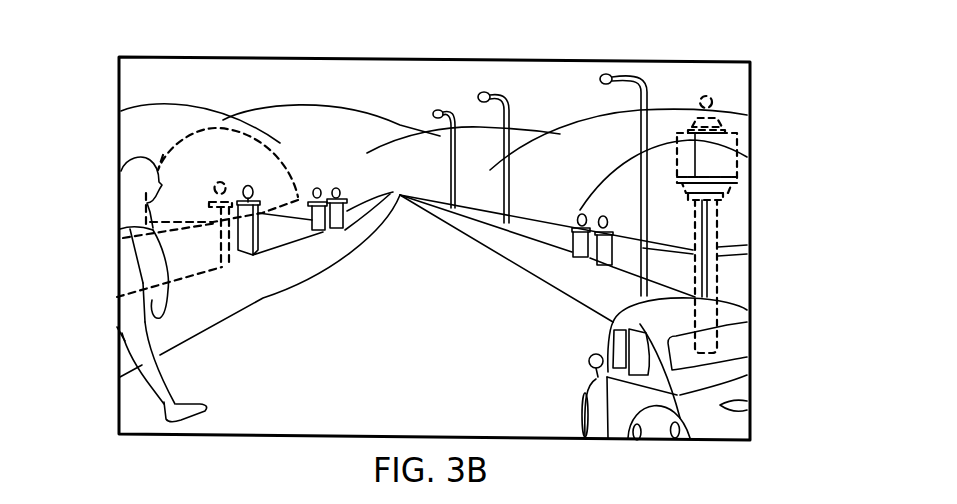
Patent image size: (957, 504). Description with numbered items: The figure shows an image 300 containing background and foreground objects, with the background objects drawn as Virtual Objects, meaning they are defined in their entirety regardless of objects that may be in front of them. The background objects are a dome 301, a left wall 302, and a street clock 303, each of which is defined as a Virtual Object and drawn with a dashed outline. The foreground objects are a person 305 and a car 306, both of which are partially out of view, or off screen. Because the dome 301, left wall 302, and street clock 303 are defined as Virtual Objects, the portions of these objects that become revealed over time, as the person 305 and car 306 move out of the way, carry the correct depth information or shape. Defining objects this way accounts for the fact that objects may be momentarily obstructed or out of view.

The image 300 is at (278, 50).
The dome 301 is at (153, 192).
The left wall 302 is at (143, 237).
The street clock 303 is at (717, 317).
The person 305 is at (145, 257).
The car 306 is at (720, 400).